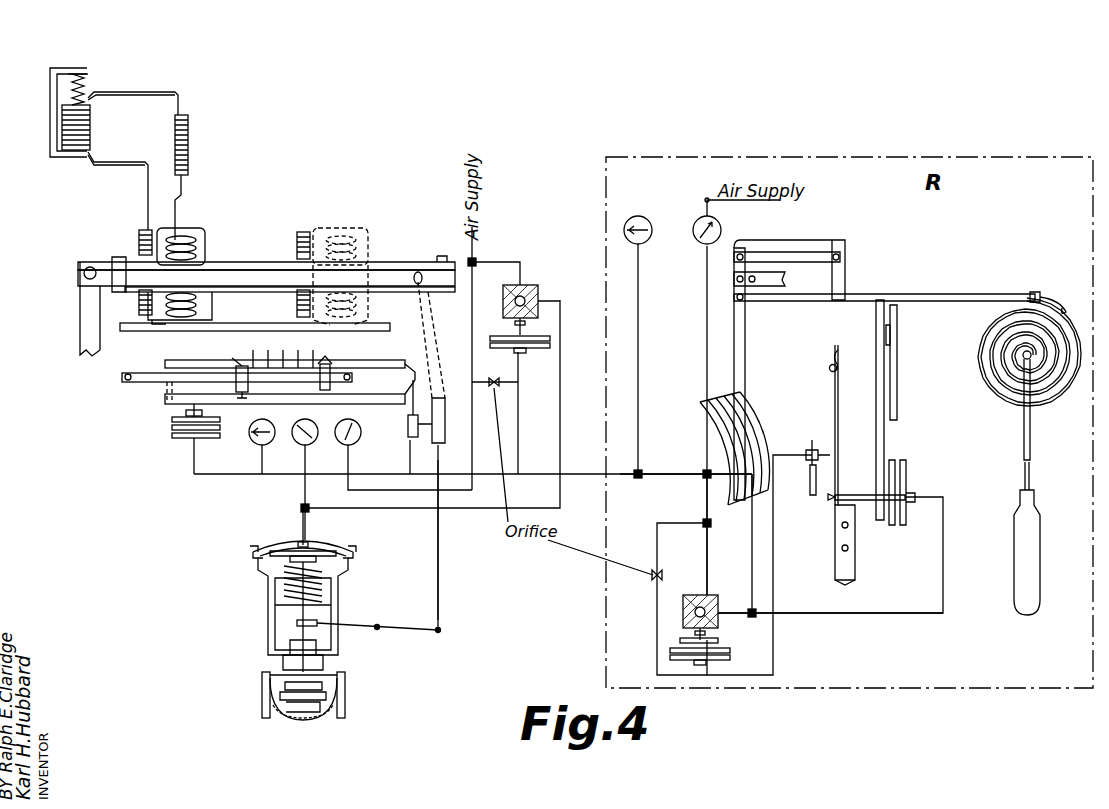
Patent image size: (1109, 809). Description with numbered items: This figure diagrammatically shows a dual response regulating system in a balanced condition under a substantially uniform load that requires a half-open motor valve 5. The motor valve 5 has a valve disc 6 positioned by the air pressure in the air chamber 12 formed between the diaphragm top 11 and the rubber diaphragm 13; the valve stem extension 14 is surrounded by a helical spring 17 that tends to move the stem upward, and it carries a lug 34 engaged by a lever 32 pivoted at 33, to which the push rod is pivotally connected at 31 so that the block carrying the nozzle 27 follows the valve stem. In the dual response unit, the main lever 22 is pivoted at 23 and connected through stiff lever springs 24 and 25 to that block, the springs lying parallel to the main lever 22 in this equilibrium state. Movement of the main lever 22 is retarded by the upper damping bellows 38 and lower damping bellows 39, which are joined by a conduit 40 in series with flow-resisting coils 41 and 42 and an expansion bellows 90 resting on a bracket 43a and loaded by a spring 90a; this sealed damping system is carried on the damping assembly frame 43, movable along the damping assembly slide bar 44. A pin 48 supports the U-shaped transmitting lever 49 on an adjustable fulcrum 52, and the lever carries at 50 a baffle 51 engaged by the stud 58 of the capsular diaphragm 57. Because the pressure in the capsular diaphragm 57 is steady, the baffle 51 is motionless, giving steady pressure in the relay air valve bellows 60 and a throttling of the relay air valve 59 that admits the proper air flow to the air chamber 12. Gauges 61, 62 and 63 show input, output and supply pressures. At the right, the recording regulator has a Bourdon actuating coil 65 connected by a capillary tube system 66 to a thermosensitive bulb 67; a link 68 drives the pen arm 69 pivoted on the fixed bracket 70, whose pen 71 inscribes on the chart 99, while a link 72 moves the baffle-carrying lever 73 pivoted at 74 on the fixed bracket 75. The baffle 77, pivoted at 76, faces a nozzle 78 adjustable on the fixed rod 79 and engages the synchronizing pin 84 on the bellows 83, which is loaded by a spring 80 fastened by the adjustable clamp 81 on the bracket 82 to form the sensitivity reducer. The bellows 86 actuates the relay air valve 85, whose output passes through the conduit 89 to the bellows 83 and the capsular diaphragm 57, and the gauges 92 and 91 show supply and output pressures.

The motor valve 5 is at (303, 718).
The valve disc 6 is at (316, 680).
The diaphragm top 11 is at (290, 545).
The air chamber 12 is at (315, 548).
The rubber diaphragm 13 is at (330, 560).
The valve stem extension 14 is at (300, 612).
The helical spring 17 is at (284, 580).
The main lever 22 is at (266, 275).
The pivot 23 is at (84, 273).
The lever springs 24 is at (235, 262).
The lever springs 25 is at (245, 292).
The nozzle 27 is at (414, 430).
The pivotal connection 31 is at (441, 632).
The lever 32 is at (378, 625).
The pivot 33 is at (378, 632).
The lug 34 is at (316, 620).
The upper damping bellows 38 is at (190, 236).
The lower damping bellows 39 is at (196, 302).
The conduit 40 is at (160, 93).
The flow-resisting coil 41 is at (188, 145).
The flow-resisting coil 42 is at (139, 236).
The damping assembly frame 43 is at (184, 212).
The bracket 43a is at (57, 150).
The damping assembly slide bar 44 is at (305, 331).
The pin 48 is at (421, 354).
The transmitting lever 49 is at (360, 360).
The pivot 50 is at (170, 360).
The baffle 51 is at (348, 378).
The fulcrum 52 is at (240, 368).
The capsular diaphragm element 57 is at (185, 438).
The stud 58 is at (185, 420).
The relay air valve 59 is at (528, 285).
The relay air valve bellows 60 is at (535, 348).
The input air pressure gauge 61 is at (253, 445).
The output air pressure gauge 62 is at (300, 447).
The air supply pressure gauge 63 is at (343, 446).
The Bourdon actuating coil 65 is at (978, 380).
The capillary tube system 66 is at (1030, 452).
The thermosensitive bulb 67 is at (1025, 545).
The link 68 is at (930, 300).
The pen arm 69 is at (743, 345).
The fixed bracket 70 is at (780, 278).
The pen 71 is at (752, 465).
The link 72 is at (770, 262).
The baffle-carrying lever 73 is at (845, 294).
The pivot 74 is at (855, 530).
The fixed bracket 75 is at (850, 565).
The baffle pivot 76 is at (840, 368).
The baffle 77 is at (840, 412).
The nozzle 78 is at (815, 448).
The fixed rod 79 is at (810, 488).
The spring 80 is at (884, 445).
The adjustable clamp 81 is at (880, 335).
The bracket 82 is at (897, 394).
The bellows 83 is at (904, 480).
The synchronizing pin 84 is at (855, 494).
The relay air valve 85 is at (704, 595).
The bellows 86 is at (722, 655).
The conduit 89 is at (650, 478).
The expansion bellows 90 is at (90, 128).
The spring 90a is at (86, 88).
The output pressure gauge 91 is at (654, 210).
The supply pressure gauge 92 is at (697, 240).
The clock-actuated chart 99 is at (738, 515).